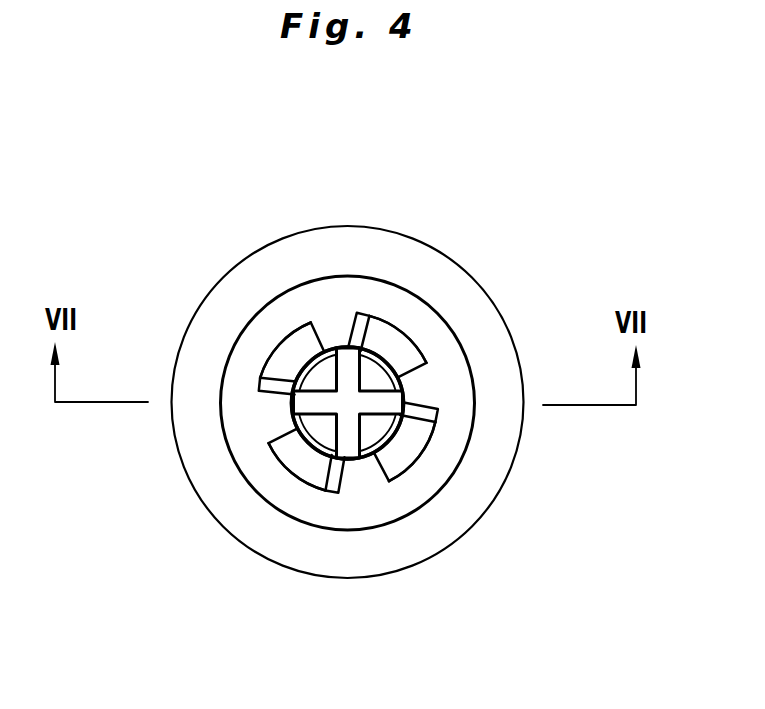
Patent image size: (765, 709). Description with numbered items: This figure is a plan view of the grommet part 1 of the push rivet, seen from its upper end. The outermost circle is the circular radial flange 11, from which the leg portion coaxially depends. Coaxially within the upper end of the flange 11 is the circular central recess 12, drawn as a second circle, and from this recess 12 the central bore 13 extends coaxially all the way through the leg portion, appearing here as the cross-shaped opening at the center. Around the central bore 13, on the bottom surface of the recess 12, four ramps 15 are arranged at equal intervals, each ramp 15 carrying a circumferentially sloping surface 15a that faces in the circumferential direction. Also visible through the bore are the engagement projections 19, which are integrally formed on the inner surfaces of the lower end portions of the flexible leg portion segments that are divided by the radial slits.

The grommet part 1 is at (458, 182).
The circular radial flange 11 is at (383, 243).
The circular central recess 12 is at (379, 528).
The central bore 13 is at (319, 359).
The ramps 15 is at (275, 347).
The circumferentially sloping surface 15a is at (297, 342).
The engagement projection 19 is at (312, 418).